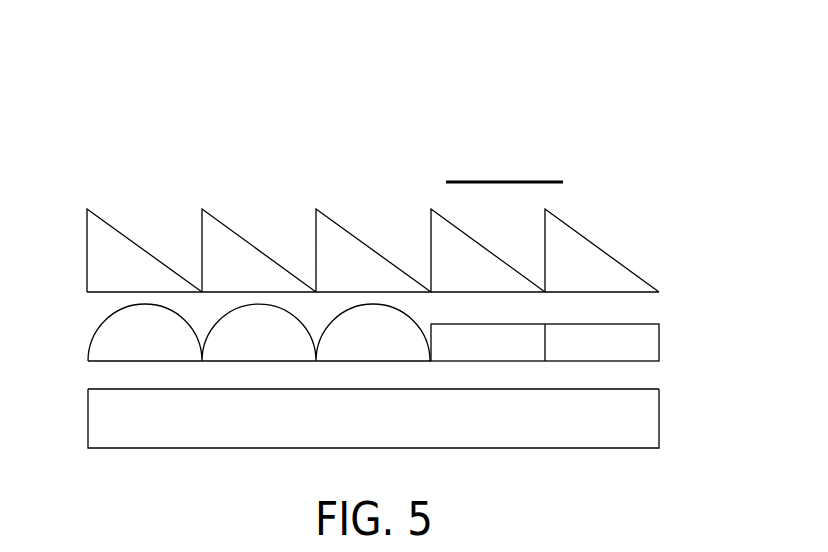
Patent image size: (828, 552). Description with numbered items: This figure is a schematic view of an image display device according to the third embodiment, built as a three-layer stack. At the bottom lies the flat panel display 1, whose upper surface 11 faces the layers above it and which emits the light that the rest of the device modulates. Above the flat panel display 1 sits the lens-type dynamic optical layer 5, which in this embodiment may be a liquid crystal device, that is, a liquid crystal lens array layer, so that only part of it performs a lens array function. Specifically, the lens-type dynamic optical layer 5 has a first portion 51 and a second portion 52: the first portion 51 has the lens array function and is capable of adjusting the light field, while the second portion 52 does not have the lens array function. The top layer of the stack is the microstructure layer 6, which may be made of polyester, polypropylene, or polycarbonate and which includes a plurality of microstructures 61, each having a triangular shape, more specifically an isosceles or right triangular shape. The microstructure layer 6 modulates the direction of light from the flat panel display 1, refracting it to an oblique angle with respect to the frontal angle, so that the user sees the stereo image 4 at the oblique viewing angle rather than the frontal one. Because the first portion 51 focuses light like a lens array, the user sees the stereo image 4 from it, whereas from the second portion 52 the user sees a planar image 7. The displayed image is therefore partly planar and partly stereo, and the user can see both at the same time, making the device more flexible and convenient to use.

The flat panel display 1 is at (378, 402).
The top surface of substrate 11 is at (106, 389).
The lens-type dynamic optical layer 5 is at (377, 330).
The first portion 51 is at (112, 328).
The second portion 52 is at (627, 337).
The microstructure layer 6 is at (360, 250).
The microstructures 61 is at (103, 243).
The planar image 7 is at (514, 172).
The stereo image 4 is at (242, 66).